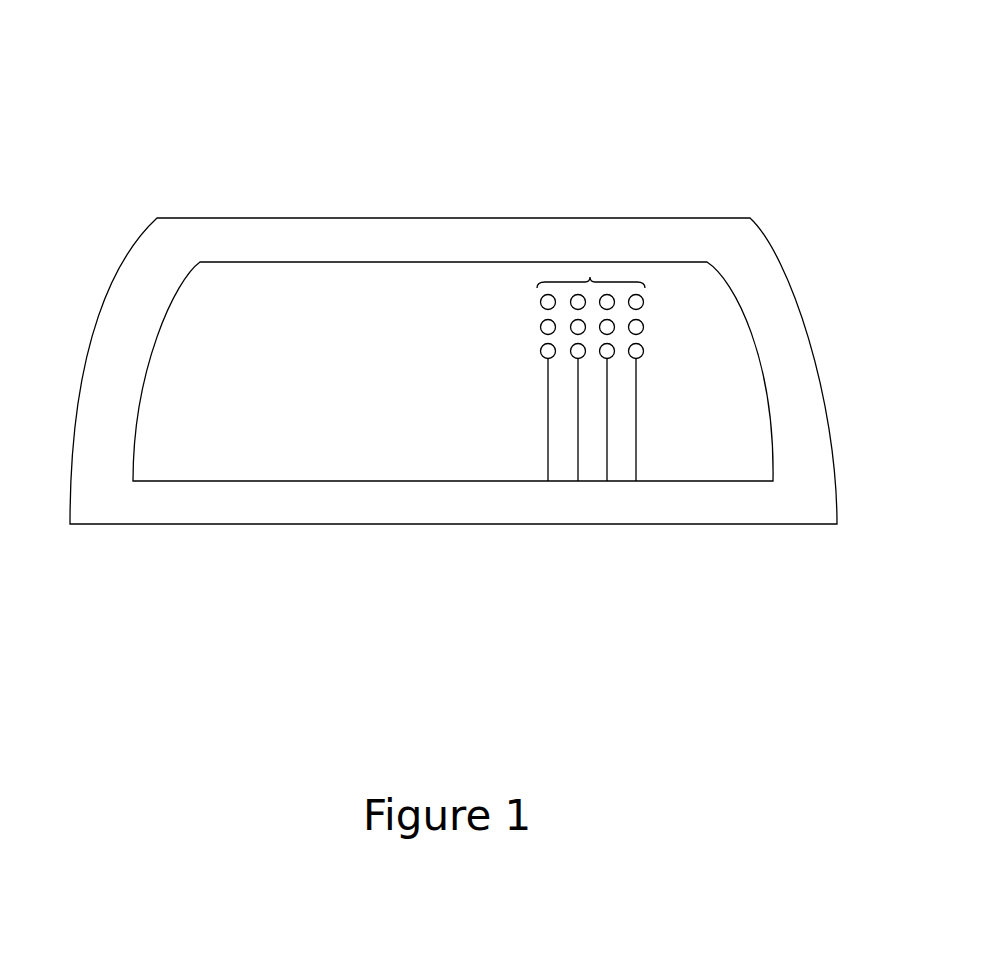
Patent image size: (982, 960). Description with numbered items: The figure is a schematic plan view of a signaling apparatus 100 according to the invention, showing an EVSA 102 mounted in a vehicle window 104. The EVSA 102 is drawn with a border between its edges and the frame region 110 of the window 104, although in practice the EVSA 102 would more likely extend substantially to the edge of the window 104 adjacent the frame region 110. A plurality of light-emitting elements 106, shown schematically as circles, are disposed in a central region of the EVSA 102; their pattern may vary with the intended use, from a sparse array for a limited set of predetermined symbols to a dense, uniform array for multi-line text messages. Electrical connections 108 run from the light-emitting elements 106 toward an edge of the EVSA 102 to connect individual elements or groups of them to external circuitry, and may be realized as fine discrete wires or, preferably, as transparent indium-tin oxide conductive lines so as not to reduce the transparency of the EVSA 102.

The electronic device 100 is at (90, 132).
The EVSA 102 is at (390, 282).
The vehicle window 104 is at (143, 253).
The light-emitting elements 106 is at (590, 277).
The electrical connections 108 is at (547, 436).
The frame region 110 is at (782, 252).